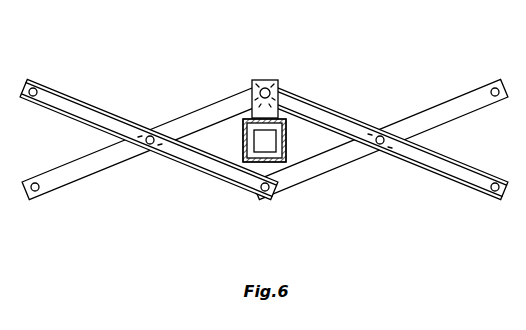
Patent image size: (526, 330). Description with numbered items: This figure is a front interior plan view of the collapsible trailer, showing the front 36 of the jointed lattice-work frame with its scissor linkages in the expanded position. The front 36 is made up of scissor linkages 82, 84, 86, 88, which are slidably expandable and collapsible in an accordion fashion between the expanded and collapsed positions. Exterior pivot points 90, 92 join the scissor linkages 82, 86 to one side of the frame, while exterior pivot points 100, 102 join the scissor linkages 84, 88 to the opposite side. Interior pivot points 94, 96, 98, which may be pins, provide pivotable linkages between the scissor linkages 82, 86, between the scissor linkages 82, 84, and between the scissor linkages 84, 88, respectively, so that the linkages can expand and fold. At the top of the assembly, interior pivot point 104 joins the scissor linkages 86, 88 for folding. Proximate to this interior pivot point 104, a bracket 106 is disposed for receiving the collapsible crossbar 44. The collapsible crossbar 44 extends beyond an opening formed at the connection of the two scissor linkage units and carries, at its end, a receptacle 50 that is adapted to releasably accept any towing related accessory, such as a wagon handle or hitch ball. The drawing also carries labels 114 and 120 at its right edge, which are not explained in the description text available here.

The front 36 is at (355, 119).
The collapsible crossbar 44 is at (287, 148).
The receptacle 50 is at (243, 148).
The scissor linkage 82 is at (149, 142).
The scissor linkage 84 is at (380, 112).
The scissor linkage 86 is at (145, 144).
The scissor linkage 88 is at (384, 153).
The exterior pivot point 90 is at (36, 87).
The exterior pivot point 92 is at (38, 192).
The interior pivot point 94 is at (150, 146).
The interior pivot point 96 is at (265, 193).
The interior pivot point 98 is at (381, 146).
The exterior pivot point 100 is at (493, 87).
The exterior pivot point 102 is at (494, 194).
The interior pivot point 104 is at (264, 79).
The bracket 106 is at (285, 118).
The member 114 is at (525, 126).
The member 120 is at (513, 57).